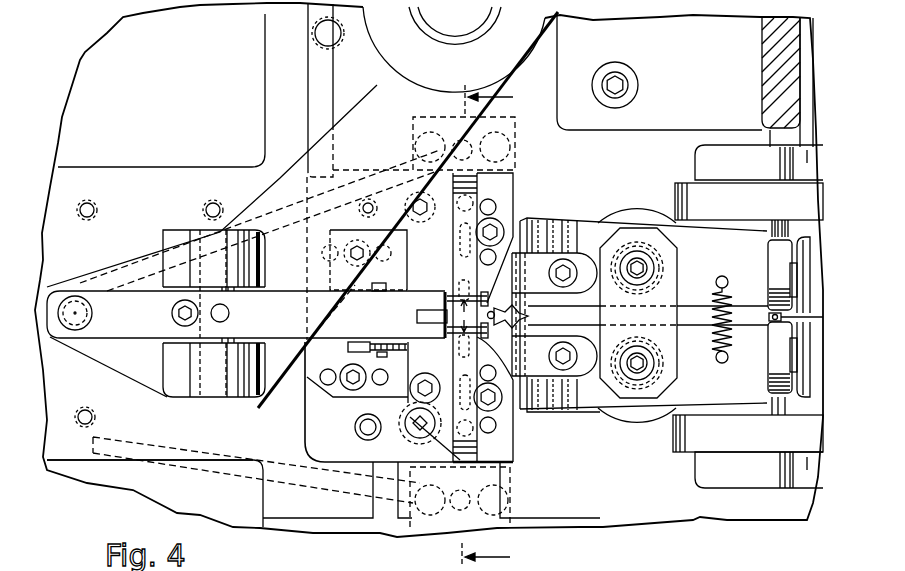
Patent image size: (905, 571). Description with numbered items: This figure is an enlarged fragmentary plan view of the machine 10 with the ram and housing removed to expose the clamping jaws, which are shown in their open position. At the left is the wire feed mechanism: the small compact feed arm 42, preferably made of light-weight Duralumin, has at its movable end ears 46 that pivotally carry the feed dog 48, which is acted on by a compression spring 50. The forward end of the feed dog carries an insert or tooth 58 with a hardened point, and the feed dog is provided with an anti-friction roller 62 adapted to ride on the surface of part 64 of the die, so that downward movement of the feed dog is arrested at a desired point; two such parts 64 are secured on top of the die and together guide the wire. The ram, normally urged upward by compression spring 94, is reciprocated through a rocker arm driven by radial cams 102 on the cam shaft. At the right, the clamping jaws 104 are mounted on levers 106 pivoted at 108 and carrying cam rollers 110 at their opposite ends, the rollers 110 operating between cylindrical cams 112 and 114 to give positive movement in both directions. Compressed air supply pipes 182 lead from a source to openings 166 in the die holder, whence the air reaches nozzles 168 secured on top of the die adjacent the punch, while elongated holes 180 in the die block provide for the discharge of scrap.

The section line 10 is at (498, 326).
The feed arm 42 is at (350, 123).
The ears 46 is at (170, 270).
The feed dog 48 is at (437, 18).
The compression spring 50 is at (72, 331).
The insert or tooth 58 is at (432, 323).
The anti-friction roller 62 is at (350, 348).
The part of the die 64 is at (397, 268).
The compression spring 94 is at (224, 515).
The radial cams 102 is at (692, 188).
The clamping jaws 104 is at (528, 316).
The levers 106 is at (584, 232).
The pivot 108 is at (634, 260).
The cam rollers 110 is at (770, 260).
The cylindrical cam 112 is at (767, 232).
The cylindrical cam 114 is at (769, 317).
The openings 166 is at (462, 201).
The nozzles 168 is at (507, 200).
The holes 180 is at (477, 207).
The compressed air supply pipes 182 is at (97, 282).